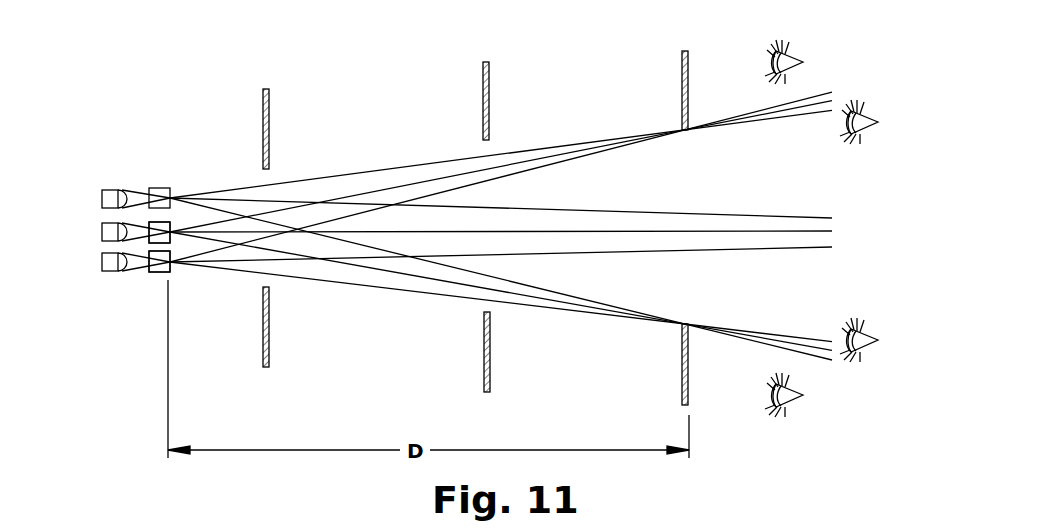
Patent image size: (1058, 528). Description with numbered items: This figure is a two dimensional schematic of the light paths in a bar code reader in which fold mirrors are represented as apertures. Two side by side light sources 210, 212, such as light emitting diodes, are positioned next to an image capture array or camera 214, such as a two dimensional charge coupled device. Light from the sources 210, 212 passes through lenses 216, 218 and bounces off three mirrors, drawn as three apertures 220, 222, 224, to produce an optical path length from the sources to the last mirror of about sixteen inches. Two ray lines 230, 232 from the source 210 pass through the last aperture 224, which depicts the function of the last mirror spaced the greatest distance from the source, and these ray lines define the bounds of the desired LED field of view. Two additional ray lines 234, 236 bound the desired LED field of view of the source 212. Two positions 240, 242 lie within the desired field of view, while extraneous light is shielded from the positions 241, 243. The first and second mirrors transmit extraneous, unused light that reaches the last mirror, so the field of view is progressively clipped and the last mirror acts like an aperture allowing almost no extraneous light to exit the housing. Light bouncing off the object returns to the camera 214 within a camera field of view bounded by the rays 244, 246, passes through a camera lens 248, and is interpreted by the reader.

The light source 210 is at (112, 190).
The light source 212 is at (110, 272).
The image capture array or camera 214 is at (102, 235).
The lens 216 is at (160, 187).
The lens 218 is at (158, 273).
The aperture 220 is at (266, 166).
The aperture 222 is at (486, 140).
The last aperture 224 is at (685, 132).
The ray line 230 is at (366, 170).
The ray line 232 is at (433, 261).
The ray line 234 is at (427, 193).
The ray line 236 is at (330, 283).
The position 240 is at (870, 133).
The position 241 is at (797, 53).
The position 242 is at (870, 350).
The position 243 is at (793, 397).
The ray 244 is at (460, 174).
The ray 246 is at (480, 288).
The camera lens 248 is at (170, 226).